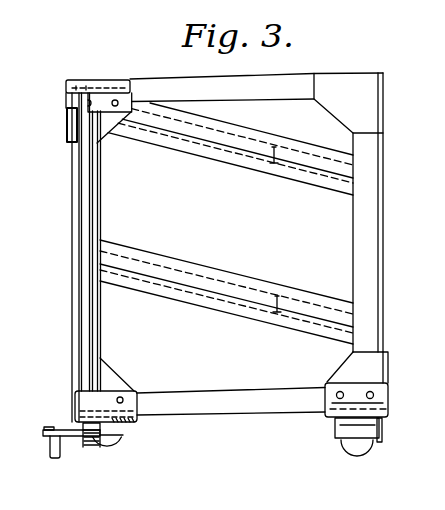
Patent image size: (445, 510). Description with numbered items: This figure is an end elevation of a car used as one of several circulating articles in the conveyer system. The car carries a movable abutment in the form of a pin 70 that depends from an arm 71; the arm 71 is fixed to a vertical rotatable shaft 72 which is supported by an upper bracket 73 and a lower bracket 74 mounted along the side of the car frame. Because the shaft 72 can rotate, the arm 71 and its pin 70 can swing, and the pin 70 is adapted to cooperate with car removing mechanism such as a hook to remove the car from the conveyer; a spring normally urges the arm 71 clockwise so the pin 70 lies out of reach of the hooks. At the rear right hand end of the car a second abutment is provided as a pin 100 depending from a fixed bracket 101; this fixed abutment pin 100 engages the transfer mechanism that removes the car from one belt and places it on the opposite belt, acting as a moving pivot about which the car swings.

The pin 70 is at (50, 449).
The arm 71 is at (72, 431).
The vertical rotatable shaft 72 is at (83, 212).
The bracket 73 is at (91, 81).
The bracket 74 is at (111, 411).
The pin 100 is at (381, 428).
The fixed bracket 101 is at (375, 395).